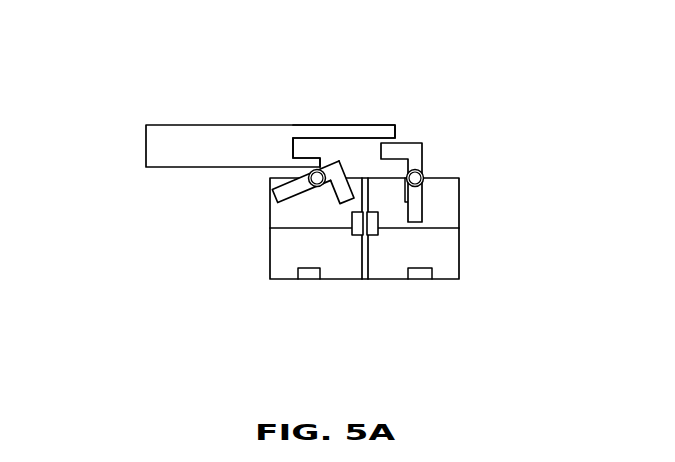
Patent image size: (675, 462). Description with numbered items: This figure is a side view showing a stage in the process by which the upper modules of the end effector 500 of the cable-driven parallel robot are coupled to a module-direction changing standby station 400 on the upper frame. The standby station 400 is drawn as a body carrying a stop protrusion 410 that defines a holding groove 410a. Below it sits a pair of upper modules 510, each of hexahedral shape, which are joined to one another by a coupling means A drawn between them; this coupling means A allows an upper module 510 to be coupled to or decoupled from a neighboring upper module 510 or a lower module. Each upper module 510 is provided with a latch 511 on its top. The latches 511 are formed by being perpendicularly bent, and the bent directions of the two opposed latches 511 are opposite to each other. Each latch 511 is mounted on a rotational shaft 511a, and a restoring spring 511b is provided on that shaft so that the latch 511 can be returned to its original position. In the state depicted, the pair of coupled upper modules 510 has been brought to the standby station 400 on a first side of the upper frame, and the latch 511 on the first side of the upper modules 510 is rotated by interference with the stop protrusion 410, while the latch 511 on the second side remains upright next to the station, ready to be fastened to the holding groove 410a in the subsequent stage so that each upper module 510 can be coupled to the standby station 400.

The module-direction changing standby station 400 is at (157, 149).
The stop protrusion 410 is at (345, 126).
The holding groove 410a is at (320, 150).
The end effector 500 is at (436, 232).
The upper module 510 is at (446, 247).
The latch 511 is at (423, 153).
The rotational shaft 511a is at (275, 185).
The restoring spring 511b is at (308, 191).
The coupling means A is at (371, 237).